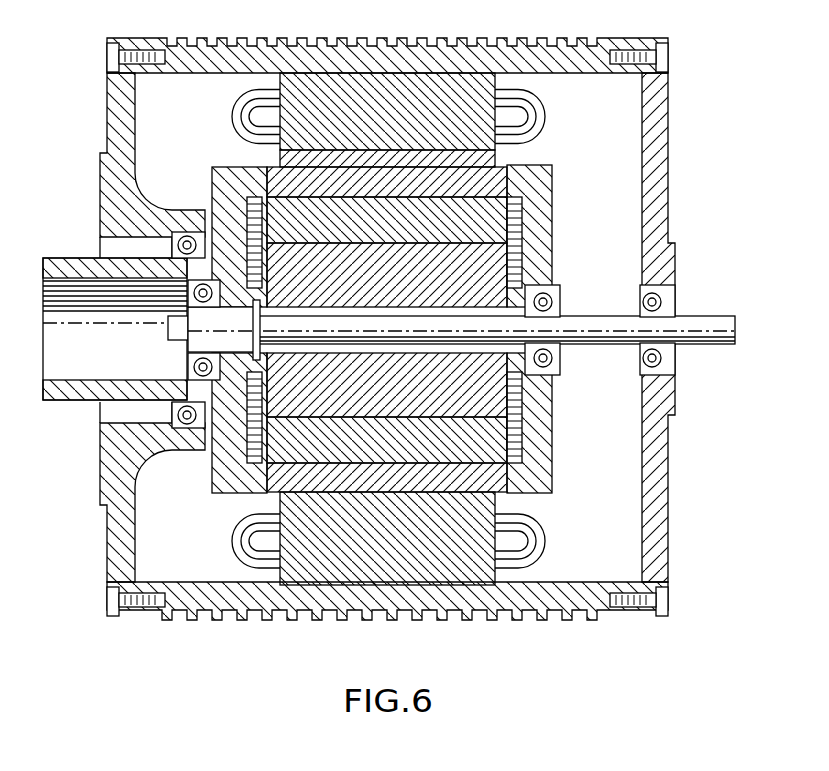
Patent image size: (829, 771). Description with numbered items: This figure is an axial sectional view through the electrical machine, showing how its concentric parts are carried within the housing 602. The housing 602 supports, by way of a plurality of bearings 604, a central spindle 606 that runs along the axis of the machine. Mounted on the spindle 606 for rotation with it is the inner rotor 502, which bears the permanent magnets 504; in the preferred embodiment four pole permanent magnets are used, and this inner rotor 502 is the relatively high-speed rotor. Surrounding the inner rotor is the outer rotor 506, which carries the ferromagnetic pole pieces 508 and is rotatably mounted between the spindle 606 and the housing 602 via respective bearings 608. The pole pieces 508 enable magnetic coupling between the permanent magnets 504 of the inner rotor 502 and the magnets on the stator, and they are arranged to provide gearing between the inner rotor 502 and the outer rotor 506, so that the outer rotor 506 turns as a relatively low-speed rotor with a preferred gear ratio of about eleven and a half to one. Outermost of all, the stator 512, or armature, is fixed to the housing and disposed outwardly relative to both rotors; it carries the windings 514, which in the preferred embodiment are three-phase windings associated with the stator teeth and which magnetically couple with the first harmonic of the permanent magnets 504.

The inner rotor 502 is at (490, 252).
The permanent magnets 504 is at (477, 215).
The outer rotor 506 is at (222, 173).
The pole pieces 508 is at (513, 182).
The stator 512 is at (398, 90).
The windings 514 is at (535, 125).
The housing 602 is at (653, 190).
The bearings 604 is at (190, 370).
The central spindle 606 is at (597, 322).
The bearings 608 is at (188, 428).